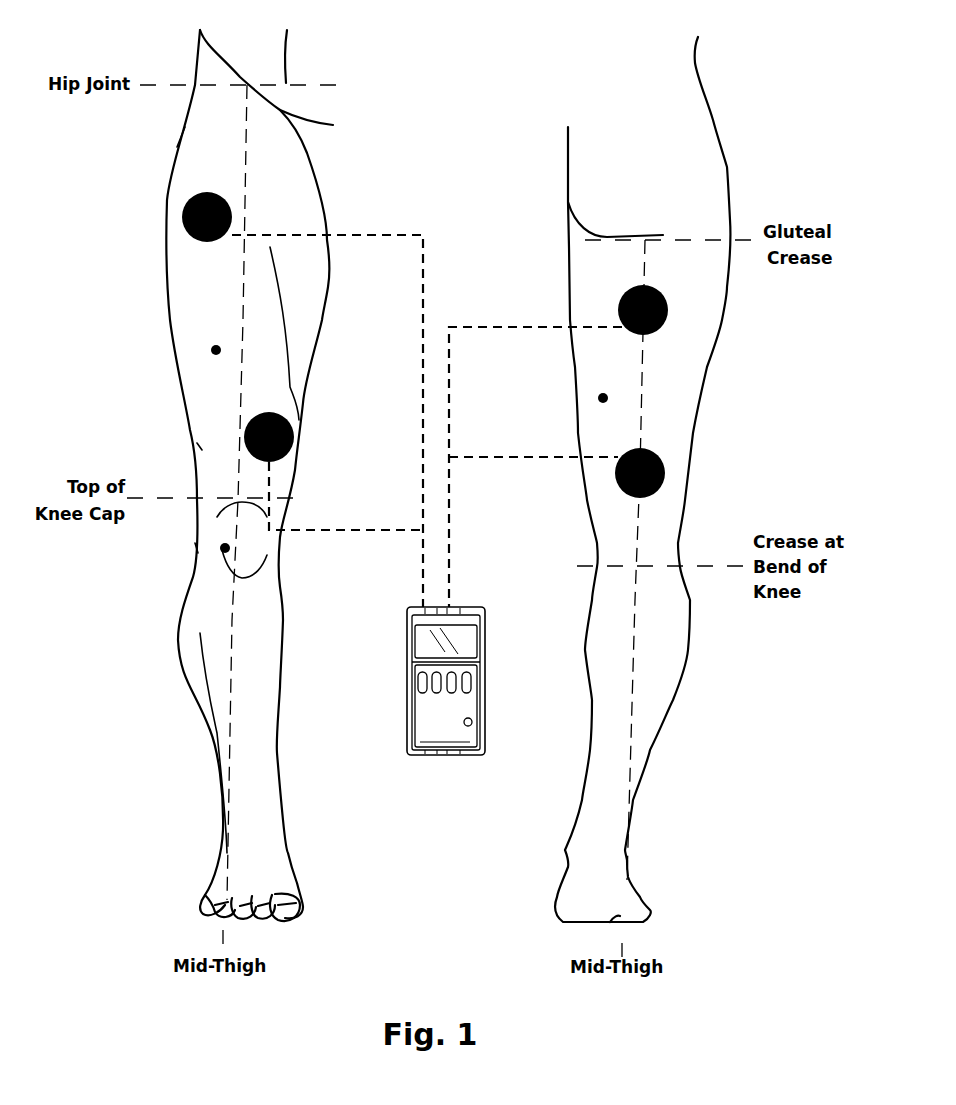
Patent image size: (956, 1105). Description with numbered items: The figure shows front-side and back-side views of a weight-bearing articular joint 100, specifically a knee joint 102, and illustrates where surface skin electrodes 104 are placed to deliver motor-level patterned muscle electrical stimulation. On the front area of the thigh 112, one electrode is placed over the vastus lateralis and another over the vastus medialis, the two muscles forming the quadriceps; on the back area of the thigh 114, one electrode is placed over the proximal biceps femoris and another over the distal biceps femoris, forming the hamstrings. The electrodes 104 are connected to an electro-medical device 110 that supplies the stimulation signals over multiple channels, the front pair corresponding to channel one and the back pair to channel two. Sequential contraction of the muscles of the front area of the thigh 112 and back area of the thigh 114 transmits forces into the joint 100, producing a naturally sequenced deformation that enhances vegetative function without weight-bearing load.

The articular joint 100 is at (448, 476).
The knee joint 102 is at (225, 548).
The surface skin electrodes 104 is at (92, 155).
The electro-medical device 110 is at (442, 757).
The front area of the thigh 112 is at (216, 350).
The back area of the thigh 114 is at (603, 398).